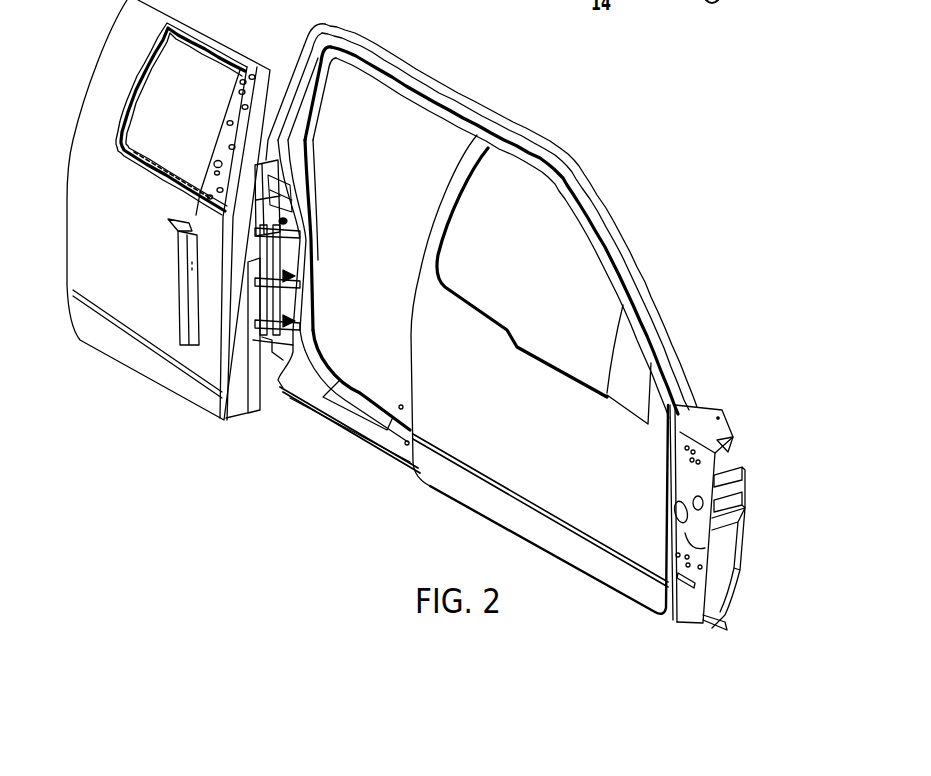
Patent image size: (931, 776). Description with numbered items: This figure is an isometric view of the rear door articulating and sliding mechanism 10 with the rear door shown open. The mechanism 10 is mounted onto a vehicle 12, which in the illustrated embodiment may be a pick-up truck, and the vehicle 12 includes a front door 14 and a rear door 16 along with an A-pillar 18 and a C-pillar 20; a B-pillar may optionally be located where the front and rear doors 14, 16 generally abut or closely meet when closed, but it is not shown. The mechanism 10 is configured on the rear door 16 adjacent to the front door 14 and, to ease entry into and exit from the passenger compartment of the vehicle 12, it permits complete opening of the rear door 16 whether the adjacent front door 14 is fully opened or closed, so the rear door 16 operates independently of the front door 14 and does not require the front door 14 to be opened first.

The rear door articulating and sliding mechanism 10 is at (287, 345).
The vehicle 12 is at (640, 210).
The front door 14 is at (597, 570).
The rear door 16 is at (110, 343).
The A-pillar 18 is at (650, 313).
The C-pillar 20 is at (288, 62).